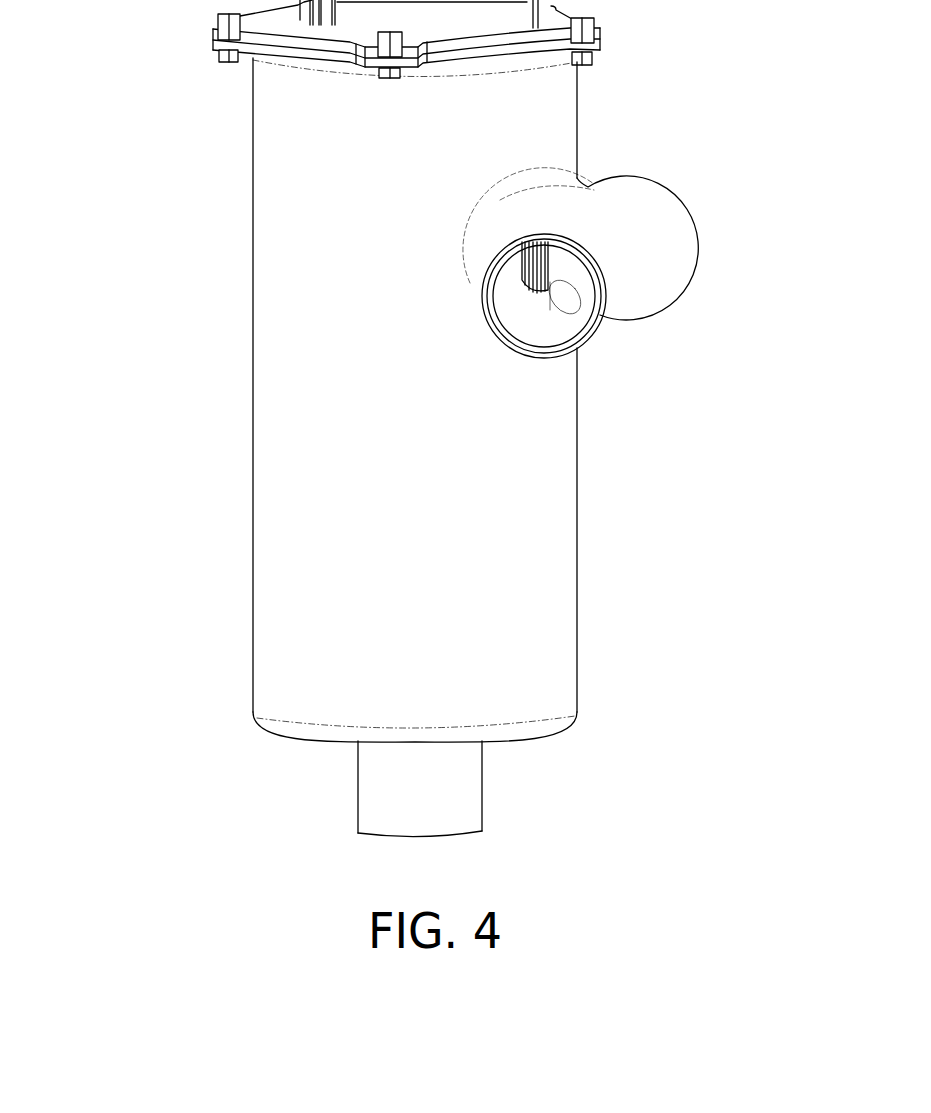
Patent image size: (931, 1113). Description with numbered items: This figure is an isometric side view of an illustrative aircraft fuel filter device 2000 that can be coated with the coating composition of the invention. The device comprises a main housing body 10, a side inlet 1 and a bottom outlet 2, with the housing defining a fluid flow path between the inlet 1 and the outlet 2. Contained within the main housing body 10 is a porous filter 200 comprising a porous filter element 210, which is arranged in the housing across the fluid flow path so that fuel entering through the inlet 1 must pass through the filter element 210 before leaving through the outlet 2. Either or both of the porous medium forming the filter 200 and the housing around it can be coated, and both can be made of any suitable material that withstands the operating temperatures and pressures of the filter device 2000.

The filter device 2000 is at (102, 233).
The main housing body 10 is at (250, 451).
The inlet 1 is at (605, 227).
The filter 200 is at (676, 267).
The filter element 210 is at (548, 266).
The outlet 2 is at (457, 793).